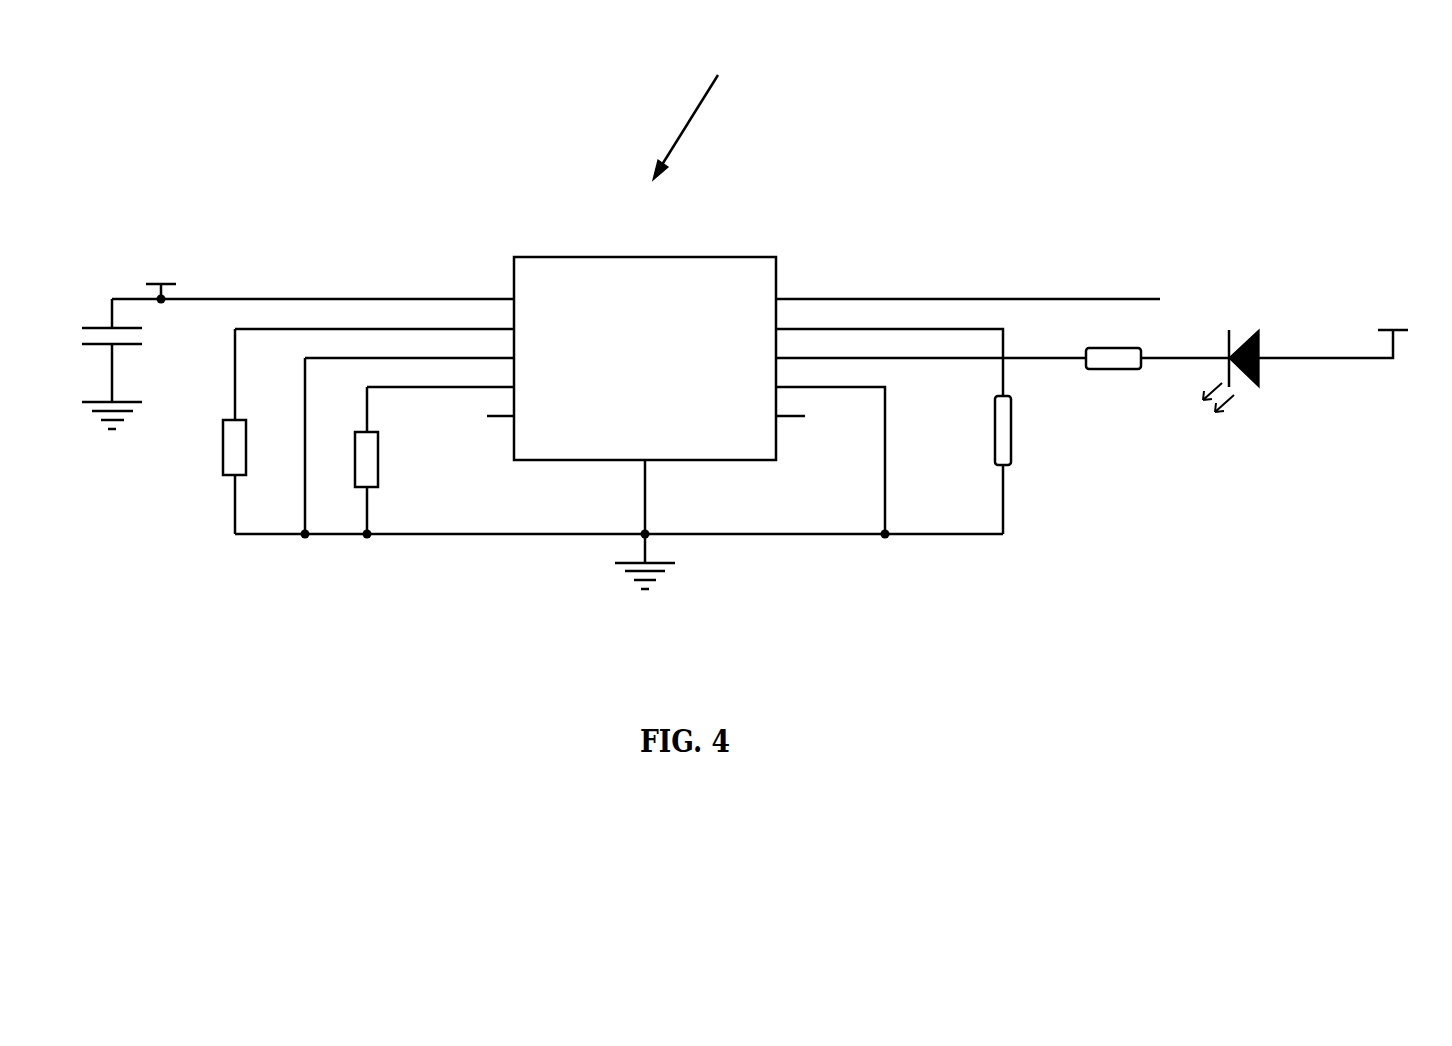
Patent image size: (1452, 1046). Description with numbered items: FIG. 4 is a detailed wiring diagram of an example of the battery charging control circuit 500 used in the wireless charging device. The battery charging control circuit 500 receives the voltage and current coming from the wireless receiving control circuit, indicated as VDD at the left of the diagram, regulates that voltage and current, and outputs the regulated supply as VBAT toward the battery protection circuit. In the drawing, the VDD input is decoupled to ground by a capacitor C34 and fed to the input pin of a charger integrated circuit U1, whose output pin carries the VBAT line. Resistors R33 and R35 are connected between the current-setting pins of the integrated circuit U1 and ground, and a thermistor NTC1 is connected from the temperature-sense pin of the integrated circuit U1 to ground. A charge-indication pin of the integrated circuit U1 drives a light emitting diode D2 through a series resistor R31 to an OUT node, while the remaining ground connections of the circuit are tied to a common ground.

The battery charging control circuit 500 is at (751, 341).
The charger IC BQ24040 U1 is at (645, 371).
The input capacitor 10uF C34 is at (135, 364).
The resistor 10k R33 is at (252, 449).
The resistor 3k R35 is at (384, 461).
The resistor 1k R31 is at (1113, 361).
The thermistor NTC1 is at (1029, 430).
The green LED D2 is at (1256, 380).